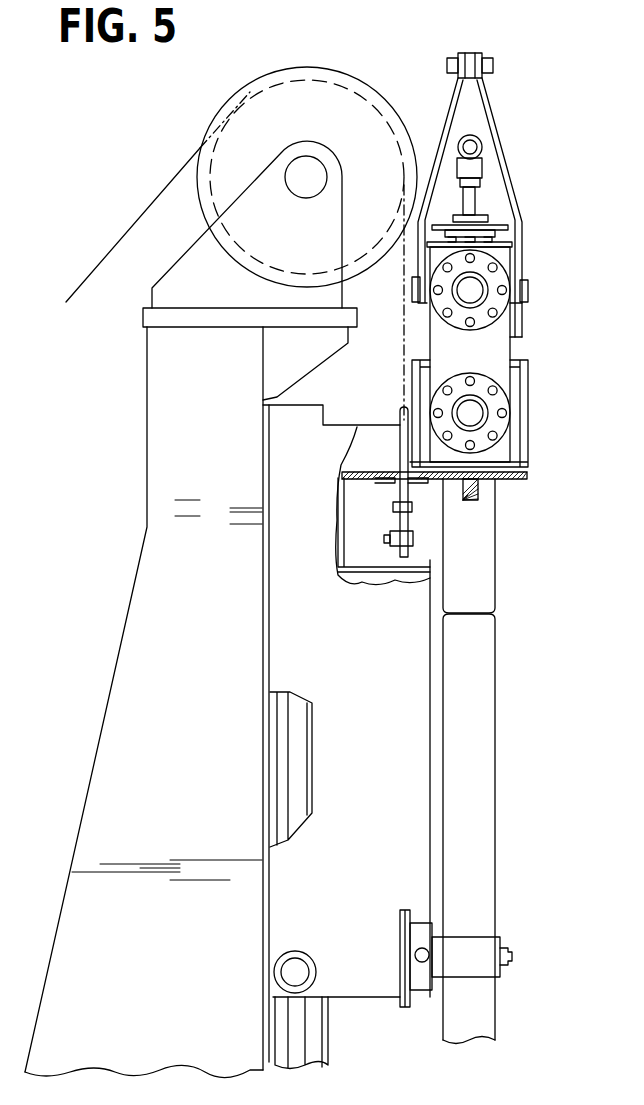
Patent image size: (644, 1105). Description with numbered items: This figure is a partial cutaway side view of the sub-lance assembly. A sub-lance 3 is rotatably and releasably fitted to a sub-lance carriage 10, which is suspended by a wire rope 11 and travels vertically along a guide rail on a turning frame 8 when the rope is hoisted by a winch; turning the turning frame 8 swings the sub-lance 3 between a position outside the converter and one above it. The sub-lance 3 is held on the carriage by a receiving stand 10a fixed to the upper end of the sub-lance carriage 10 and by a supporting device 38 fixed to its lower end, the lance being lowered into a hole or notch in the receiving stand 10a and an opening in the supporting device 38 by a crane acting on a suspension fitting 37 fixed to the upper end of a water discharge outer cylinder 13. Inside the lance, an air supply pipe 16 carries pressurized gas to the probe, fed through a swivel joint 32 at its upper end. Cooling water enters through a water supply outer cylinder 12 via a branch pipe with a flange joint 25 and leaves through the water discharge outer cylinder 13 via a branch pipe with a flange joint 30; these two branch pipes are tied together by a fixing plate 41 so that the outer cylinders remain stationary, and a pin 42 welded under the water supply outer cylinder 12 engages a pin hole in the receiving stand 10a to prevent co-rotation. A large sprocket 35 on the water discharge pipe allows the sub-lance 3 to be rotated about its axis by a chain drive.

The sub-lance 3 is at (506, 856).
The turning frame 8 is at (118, 672).
The sub-lance carriage 10 is at (423, 767).
The receiving stand 10a is at (508, 480).
The wire rope 11 is at (137, 218).
The water supply outer cylinder 12 is at (522, 388).
The water discharge outer cylinder 13 is at (502, 262).
The air supply pipe 16 is at (472, 200).
The flange joint 25 is at (503, 430).
The flange joint 30 is at (497, 307).
The swivel joint 32 is at (478, 168).
The large sprocket 35 is at (500, 223).
The suspension fitting 37 is at (495, 122).
The supporting device 38 is at (500, 940).
The fixing plate 41 is at (502, 327).
The pin 42 is at (475, 500).